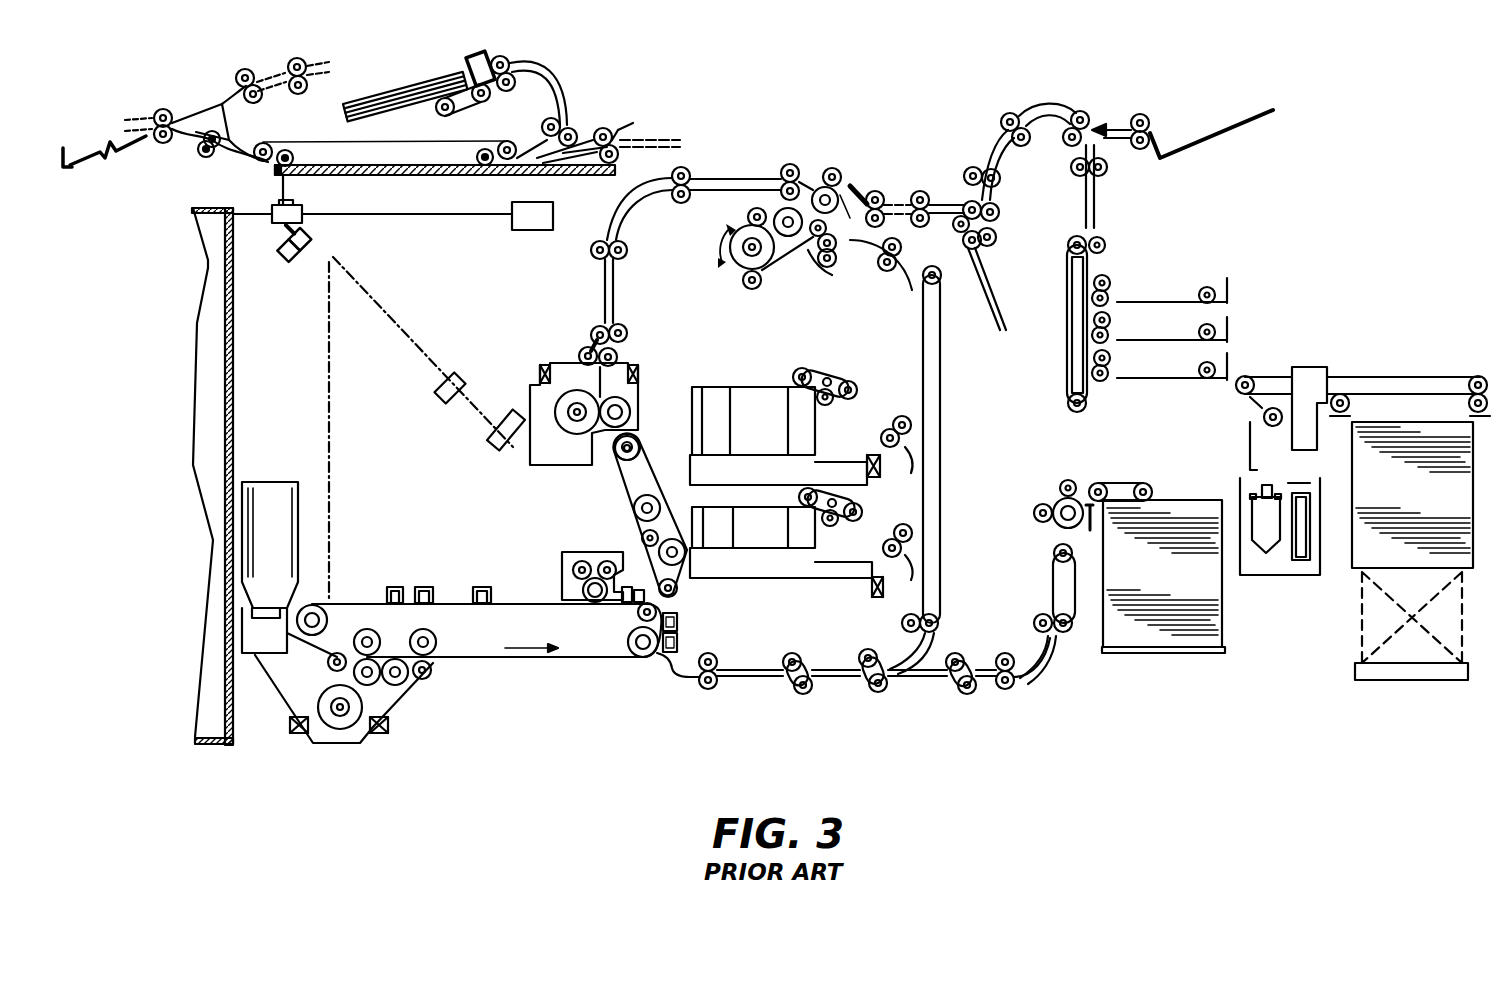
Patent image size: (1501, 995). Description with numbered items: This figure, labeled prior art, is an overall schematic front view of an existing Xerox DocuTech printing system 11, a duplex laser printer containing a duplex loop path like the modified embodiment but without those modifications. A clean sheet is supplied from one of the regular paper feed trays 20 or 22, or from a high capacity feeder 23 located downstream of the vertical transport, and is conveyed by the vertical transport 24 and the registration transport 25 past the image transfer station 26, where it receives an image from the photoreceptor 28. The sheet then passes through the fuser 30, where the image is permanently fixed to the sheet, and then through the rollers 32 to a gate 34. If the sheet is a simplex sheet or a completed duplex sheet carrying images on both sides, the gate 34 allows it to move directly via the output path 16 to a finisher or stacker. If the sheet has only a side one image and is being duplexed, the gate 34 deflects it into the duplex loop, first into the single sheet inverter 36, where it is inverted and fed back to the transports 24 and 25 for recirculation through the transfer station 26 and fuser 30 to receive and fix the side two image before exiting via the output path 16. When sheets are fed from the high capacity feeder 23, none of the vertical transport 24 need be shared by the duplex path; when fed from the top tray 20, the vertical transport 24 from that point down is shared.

The printing system 11 is at (724, 166).
The rollers 32 is at (822, 186).
The gate 34 is at (852, 194).
The output path 16 is at (938, 194).
The single sheet inverter 36 is at (828, 268).
The fuser 30 is at (637, 355).
The paper feed tray 20 is at (750, 388).
The paper feed tray 22 is at (747, 580).
The vertical transport 24 is at (921, 386).
The high capacity feeder 23 is at (1121, 478).
The registration transport 25 is at (841, 700).
The image transfer station 26 is at (678, 640).
The photoreceptor 28 is at (590, 660).